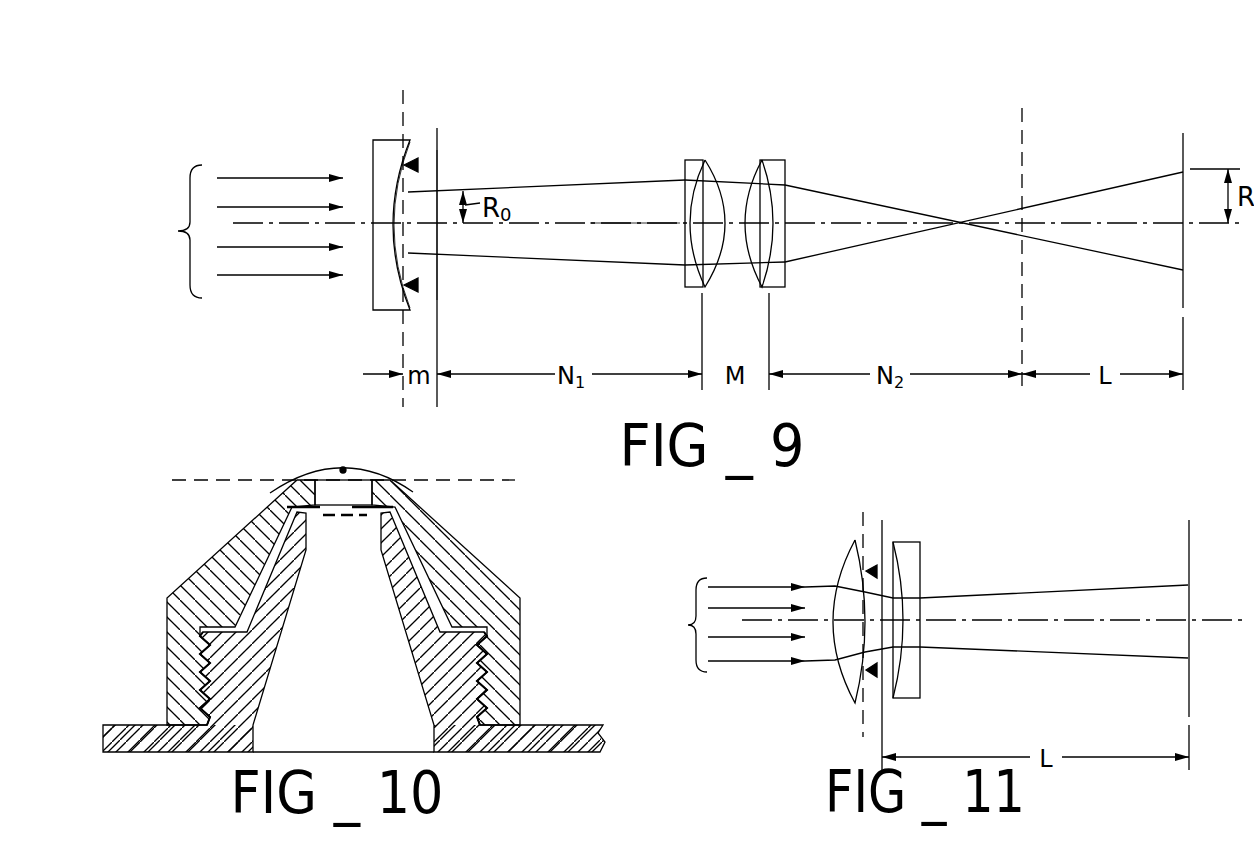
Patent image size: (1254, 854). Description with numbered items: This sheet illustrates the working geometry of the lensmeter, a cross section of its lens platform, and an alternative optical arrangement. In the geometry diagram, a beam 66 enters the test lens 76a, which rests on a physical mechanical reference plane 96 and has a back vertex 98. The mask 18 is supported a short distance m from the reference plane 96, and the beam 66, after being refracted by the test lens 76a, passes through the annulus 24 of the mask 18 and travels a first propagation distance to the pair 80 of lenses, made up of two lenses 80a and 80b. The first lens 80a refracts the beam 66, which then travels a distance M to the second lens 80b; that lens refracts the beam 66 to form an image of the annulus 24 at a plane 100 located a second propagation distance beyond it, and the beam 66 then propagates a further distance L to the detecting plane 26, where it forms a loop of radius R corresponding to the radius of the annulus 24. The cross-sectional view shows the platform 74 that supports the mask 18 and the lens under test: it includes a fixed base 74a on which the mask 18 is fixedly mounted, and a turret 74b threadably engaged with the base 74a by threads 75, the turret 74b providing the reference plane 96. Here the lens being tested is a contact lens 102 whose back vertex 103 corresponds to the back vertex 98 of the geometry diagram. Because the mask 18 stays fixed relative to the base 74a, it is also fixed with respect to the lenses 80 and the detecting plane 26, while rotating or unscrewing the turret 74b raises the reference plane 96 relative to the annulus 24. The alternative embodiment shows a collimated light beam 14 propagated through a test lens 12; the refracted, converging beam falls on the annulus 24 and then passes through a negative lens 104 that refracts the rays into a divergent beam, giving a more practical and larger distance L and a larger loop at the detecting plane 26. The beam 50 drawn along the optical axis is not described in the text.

In FIG. 9, the beam 66 is at (627, 180).
In FIG. 9, the test lens 76a is at (383, 137).
In FIG. 9, the back vertex 98 is at (403, 227).
In FIG. 9, the reference plane 96 is at (406, 100).
In FIG. 10, the reference plane 96 is at (185, 478).
In FIG. 9, the mask 18 is at (438, 148).
In FIG. 10, the mask 18 is at (395, 506).
In FIG. 11, the mask 18 is at (883, 523).
In FIG. 9, the annulus 24 is at (440, 258).
In FIG. 10, the annulus 24 is at (290, 507).
In FIG. 9, the optical axis beam 50 is at (587, 227).
In FIG. 9, the pair of lenses 80 is at (738, 212).
In FIG. 9, the lens 80a is at (685, 280).
In FIG. 9, the lens 80b is at (785, 277).
In FIG. 9, the plane 100 is at (1018, 120).
In FIG. 9, the detecting plane 26 is at (1182, 148).
In FIG. 11, the detecting plane 26 is at (1192, 535).
In FIG. 10, the platform 74 is at (340, 616).
In FIG. 10, the turret 74b is at (183, 607).
In FIG. 10, the fixed base 74a is at (227, 677).
In FIG. 10, the threads 75 is at (487, 681).
In FIG. 10, the contact lens 102 is at (387, 477).
In FIG. 10, the back vertex 103 is at (343, 468).
In FIG. 11, the collimated light beam 14 is at (757, 585).
In FIG. 11, the test lens 12 is at (845, 557).
In FIG. 11, the negative lens 104 is at (921, 557).